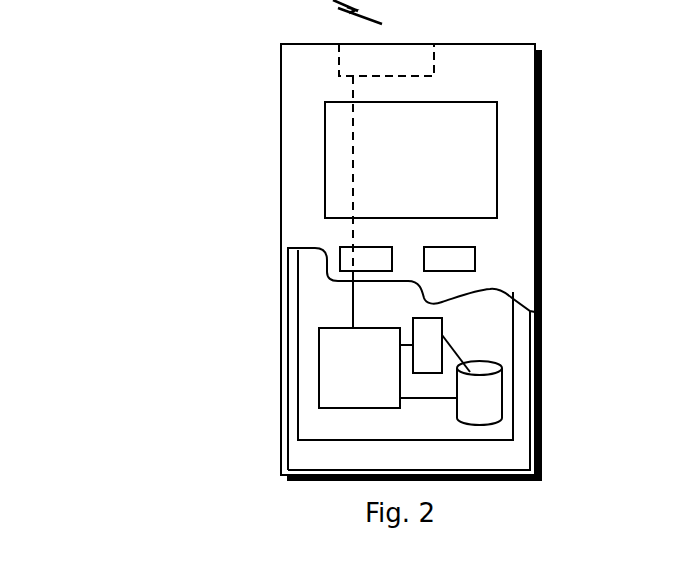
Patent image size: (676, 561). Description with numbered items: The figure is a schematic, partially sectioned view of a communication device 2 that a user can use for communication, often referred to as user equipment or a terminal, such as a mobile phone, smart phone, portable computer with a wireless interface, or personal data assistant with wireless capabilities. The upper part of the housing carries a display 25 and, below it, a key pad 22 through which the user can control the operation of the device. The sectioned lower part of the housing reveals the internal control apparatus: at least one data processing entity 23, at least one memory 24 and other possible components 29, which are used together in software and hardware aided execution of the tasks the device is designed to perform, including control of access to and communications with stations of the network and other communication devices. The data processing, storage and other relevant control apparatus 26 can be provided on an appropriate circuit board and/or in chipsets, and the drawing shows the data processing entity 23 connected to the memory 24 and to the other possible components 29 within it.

The communication device 2 is at (210, 73).
The display 25 is at (345, 150).
The key pad 22 is at (345, 258).
The other possible components 29 is at (427, 332).
The data processing entity 23 is at (327, 353).
The data processing/storage apparatus 26 is at (320, 427).
The memory 24 is at (473, 402).